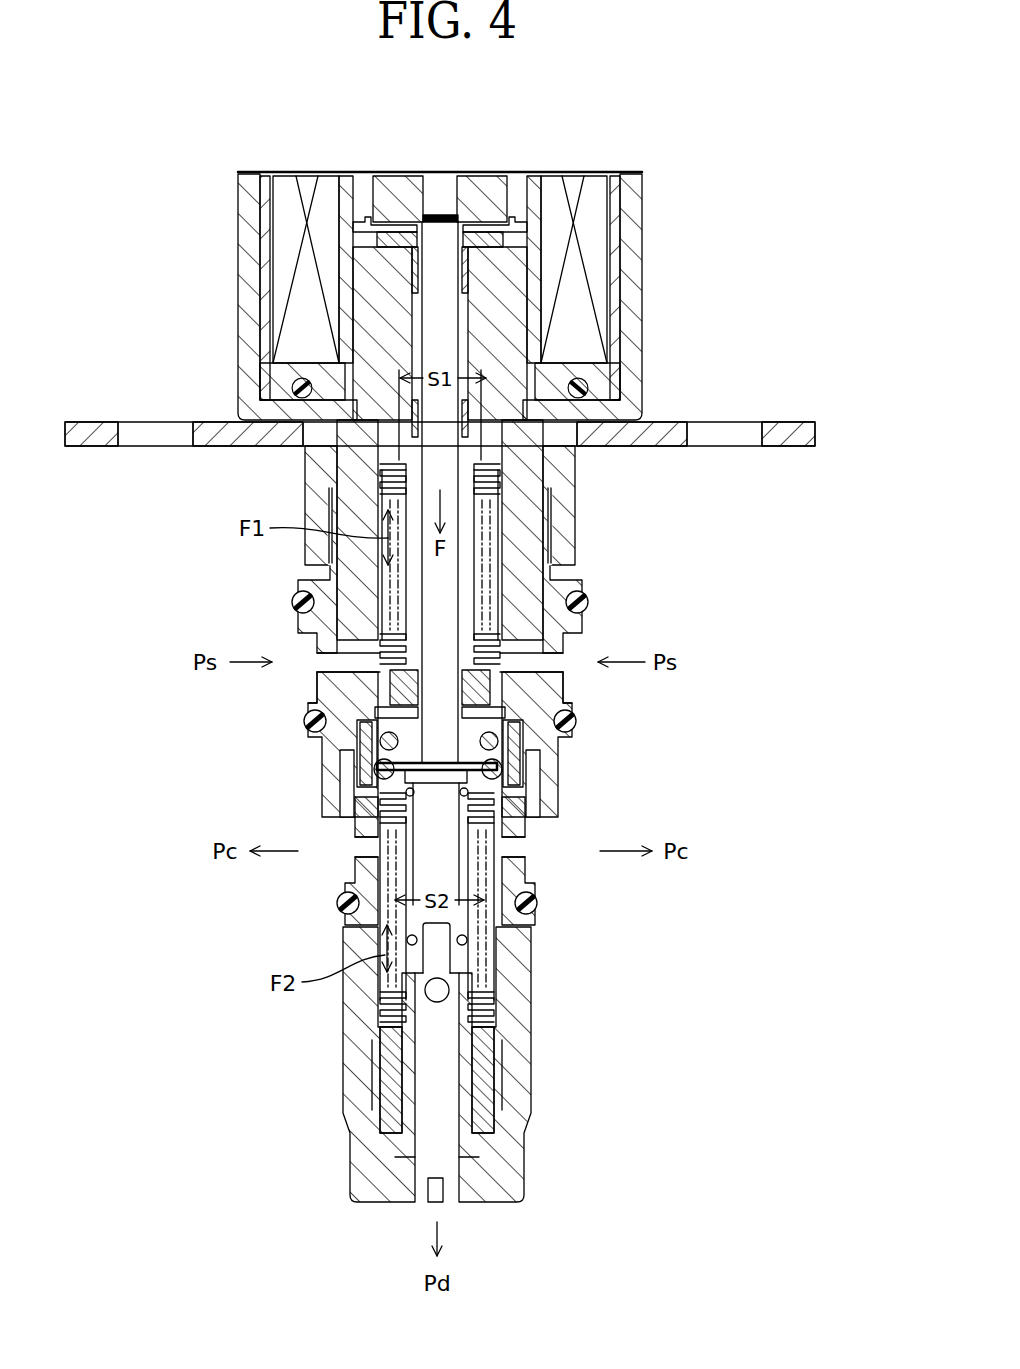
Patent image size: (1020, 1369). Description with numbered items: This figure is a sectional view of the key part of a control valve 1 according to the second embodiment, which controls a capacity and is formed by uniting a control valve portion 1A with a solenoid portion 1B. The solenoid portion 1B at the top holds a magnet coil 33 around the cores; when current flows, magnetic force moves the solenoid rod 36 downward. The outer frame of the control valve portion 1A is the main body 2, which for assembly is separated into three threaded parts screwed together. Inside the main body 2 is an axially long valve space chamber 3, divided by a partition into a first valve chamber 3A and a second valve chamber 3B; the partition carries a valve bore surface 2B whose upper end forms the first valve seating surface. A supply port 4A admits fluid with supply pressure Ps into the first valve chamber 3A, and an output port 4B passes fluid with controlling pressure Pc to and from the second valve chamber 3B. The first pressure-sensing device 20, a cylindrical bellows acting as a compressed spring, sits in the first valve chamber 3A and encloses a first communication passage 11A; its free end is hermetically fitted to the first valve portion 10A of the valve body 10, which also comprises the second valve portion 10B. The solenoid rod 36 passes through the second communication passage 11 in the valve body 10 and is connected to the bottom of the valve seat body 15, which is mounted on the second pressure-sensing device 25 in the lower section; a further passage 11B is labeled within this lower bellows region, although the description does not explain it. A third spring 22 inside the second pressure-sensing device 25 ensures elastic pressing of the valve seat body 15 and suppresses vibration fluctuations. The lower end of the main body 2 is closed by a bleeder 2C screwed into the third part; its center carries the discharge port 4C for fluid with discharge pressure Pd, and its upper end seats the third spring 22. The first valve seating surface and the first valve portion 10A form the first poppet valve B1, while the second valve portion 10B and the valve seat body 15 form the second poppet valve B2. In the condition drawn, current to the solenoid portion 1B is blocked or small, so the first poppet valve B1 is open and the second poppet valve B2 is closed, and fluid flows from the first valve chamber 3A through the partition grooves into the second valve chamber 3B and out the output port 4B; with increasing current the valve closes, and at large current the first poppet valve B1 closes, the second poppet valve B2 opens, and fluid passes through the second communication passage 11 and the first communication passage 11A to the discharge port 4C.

The control valve 1 is at (655, 173).
The control valve portion 1A is at (585, 589).
The solenoid portion 1B is at (648, 262).
The main body 2 is at (534, 1047).
The valve bore surface 2B is at (318, 710).
The bleeder 2C is at (364, 915).
The valve space chamber 3 is at (382, 600).
The first valve chamber 3A is at (377, 652).
The second valve chamber 3B is at (380, 835).
The supply port 4A is at (318, 672).
The output port 4B is at (358, 856).
The discharge port 4C is at (440, 953).
The valve body 10 is at (502, 750).
The first valve portion 10A is at (494, 668).
The second valve portion 10B is at (366, 748).
The second communication passage 11 is at (427, 848).
The first communication passage 11A is at (463, 523).
The lower bellows 11B is at (448, 856).
The valve seat body 15 is at (506, 787).
The first pressure-sensing device 20 is at (505, 545).
The third spring 22 is at (512, 803).
The second pressure-sensing device 25 is at (500, 931).
The magnet coil 33 is at (307, 172).
The solenoid rod 36 is at (441, 262).
The first poppet valve B1 is at (514, 680).
The second poppet valve B2 is at (516, 748).